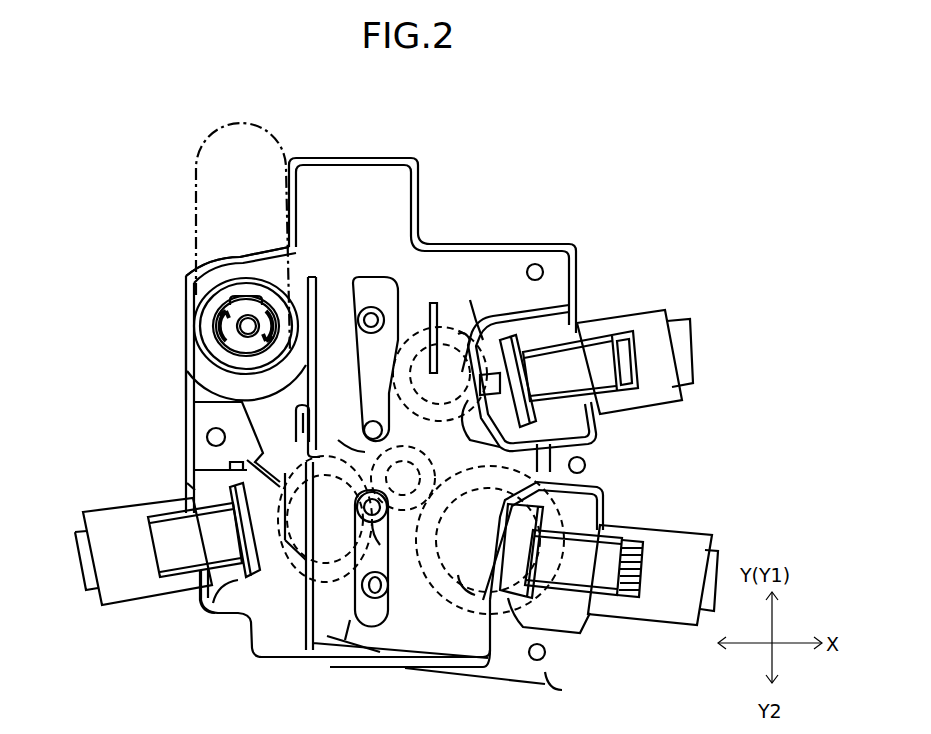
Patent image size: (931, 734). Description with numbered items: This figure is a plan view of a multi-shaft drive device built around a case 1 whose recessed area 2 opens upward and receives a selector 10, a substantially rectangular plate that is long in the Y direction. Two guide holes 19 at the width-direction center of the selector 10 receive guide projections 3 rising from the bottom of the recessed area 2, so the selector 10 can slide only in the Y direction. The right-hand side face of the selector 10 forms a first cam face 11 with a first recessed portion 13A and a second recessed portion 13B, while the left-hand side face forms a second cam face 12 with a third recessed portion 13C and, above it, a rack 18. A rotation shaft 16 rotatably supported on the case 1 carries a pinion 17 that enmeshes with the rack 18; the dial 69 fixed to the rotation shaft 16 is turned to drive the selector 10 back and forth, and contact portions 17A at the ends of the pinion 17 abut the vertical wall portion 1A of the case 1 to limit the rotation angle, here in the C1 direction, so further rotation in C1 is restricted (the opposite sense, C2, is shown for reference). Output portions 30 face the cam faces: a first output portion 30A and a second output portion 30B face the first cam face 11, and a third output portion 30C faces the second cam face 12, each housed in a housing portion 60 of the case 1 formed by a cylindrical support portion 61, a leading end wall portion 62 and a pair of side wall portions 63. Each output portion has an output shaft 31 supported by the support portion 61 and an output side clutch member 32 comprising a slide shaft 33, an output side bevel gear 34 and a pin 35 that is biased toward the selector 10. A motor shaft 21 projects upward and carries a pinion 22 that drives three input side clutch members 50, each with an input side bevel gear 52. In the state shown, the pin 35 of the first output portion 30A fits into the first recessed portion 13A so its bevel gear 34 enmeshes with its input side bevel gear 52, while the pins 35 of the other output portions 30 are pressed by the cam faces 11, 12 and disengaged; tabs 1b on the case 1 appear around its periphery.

The case 1 is at (283, 665).
The vertical wall portion 1A is at (187, 340).
The mounting tab 1b is at (541, 263).
The recessed area 2 is at (392, 197).
The guide projections 3 is at (372, 308).
The selector 10 is at (403, 656).
The first cam face 11 is at (520, 441).
The second cam face 12 is at (244, 592).
The first recessed portion 13A is at (527, 498).
The second recessed portion 13B is at (528, 400).
The third recessed portion 13C is at (308, 648).
The rotation shaft 16 is at (210, 284).
The pinion 17 is at (198, 386).
The contact portions 17A is at (292, 290).
The rack 18 is at (310, 377).
The guide holes 19 is at (355, 305).
The motor shaft 21 is at (373, 527).
The pinion 22 is at (362, 450).
The output portions 30 is at (405, 441).
The first output portion 30A is at (557, 598).
The second output portion 30B is at (553, 338).
The third output portion 30C is at (173, 558).
The output shafts 31 is at (687, 333).
The output side clutch members 32 is at (636, 380).
The slide shaft 33 is at (597, 352).
The output side bevel gear 34 is at (507, 378).
The pin 35 is at (455, 330).
The input side clutch members 50 is at (470, 300).
The input side bevel gear 52 is at (458, 334).
The housing portions 60 is at (537, 325).
The support portion 61 is at (625, 318).
The leading end wall portion 62 is at (416, 385).
The side wall portions 63 is at (236, 447).
The dial 69 is at (262, 128).
The C1 direction C1 is at (222, 327).
The second axis center C2 is at (270, 333).